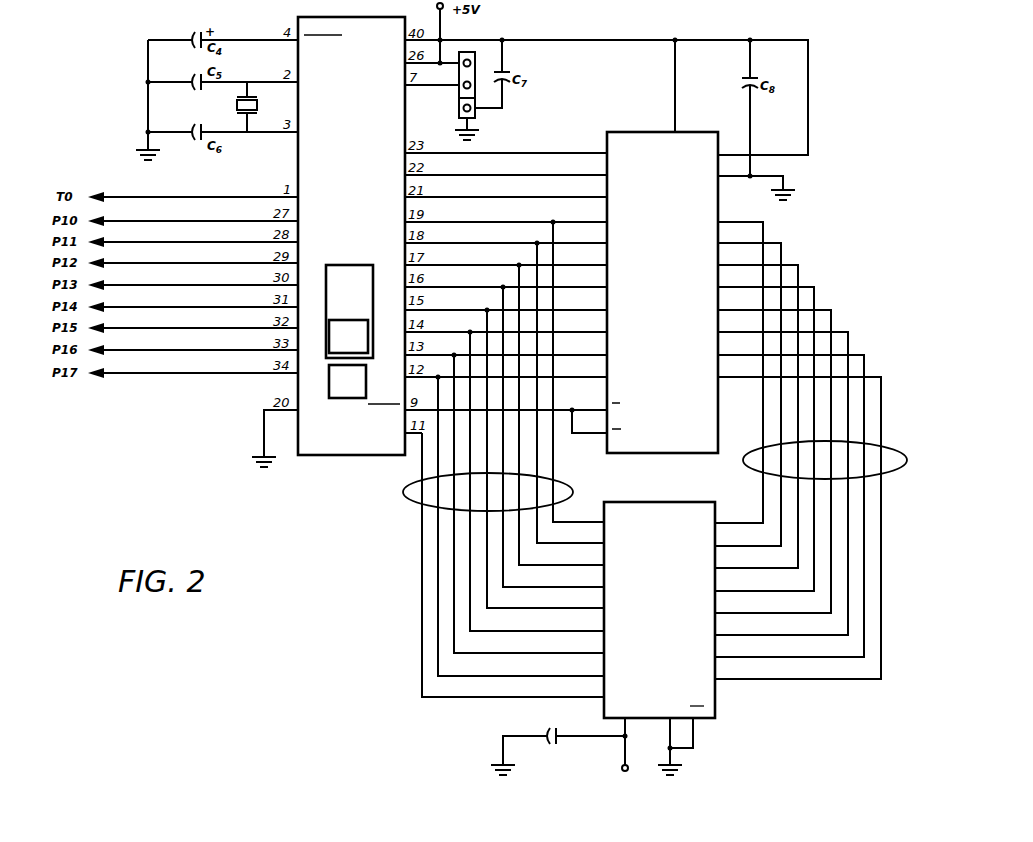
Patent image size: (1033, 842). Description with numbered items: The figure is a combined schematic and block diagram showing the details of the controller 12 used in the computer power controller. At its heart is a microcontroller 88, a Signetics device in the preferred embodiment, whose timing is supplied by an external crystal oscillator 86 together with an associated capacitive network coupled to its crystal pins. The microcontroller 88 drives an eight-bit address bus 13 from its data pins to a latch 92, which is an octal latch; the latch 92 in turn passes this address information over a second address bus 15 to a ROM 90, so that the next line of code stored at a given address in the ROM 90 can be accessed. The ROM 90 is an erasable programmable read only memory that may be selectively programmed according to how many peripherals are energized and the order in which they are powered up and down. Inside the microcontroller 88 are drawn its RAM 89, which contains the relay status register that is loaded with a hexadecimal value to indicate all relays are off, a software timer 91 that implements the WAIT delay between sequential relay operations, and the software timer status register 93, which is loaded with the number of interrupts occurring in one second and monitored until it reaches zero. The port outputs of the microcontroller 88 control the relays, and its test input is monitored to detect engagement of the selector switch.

The controller 12 is at (368, 488).
The address bus 13 is at (574, 490).
The second address bus 15 is at (748, 486).
The crystal oscillator 86 is at (237, 105).
The microcontroller 88 is at (360, 208).
The RAM 89 is at (362, 304).
The ROM 90 is at (672, 296).
The software timer 91 is at (358, 391).
The latch 92 is at (674, 636).
The software timer status register 93 is at (360, 346).